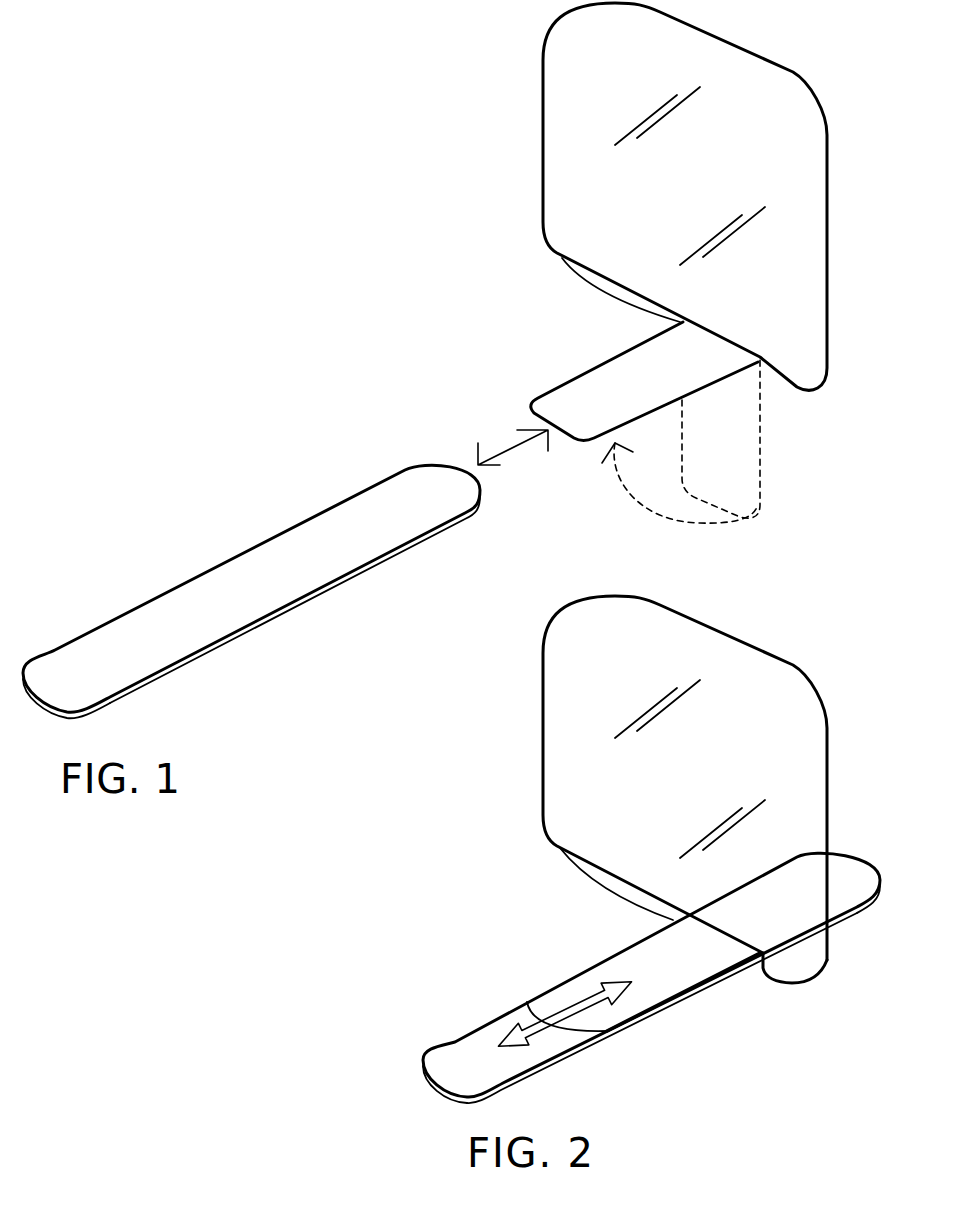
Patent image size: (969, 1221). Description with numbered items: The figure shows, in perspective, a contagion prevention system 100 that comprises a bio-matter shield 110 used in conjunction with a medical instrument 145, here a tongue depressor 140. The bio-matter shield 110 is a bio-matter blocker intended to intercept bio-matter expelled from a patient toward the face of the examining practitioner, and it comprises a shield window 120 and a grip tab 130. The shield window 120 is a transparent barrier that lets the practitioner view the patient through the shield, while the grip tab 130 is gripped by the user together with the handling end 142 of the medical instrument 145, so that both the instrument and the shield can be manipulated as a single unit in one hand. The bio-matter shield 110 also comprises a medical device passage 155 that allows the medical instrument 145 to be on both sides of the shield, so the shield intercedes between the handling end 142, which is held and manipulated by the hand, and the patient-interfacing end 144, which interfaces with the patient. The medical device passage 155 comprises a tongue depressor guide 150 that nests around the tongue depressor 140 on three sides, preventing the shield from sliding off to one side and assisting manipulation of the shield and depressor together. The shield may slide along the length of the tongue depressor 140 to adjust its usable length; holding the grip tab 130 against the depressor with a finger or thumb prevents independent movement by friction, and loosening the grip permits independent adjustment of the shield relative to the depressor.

In FIG. 1, the contagion prevention system 100 is at (508, 49).
In FIG. 2, the contagion prevention system 100 is at (784, 630).
In FIG. 1, the bio-matter shield 110 is at (502, 95).
In FIG. 2, the bio-matter shield 110 is at (512, 753).
In FIG. 1, the shield window 120 is at (570, 169).
In FIG. 2, the shield window 120 is at (560, 798).
In FIG. 1, the grip tab 130 is at (600, 357).
In FIG. 2, the grip tab 130 is at (617, 957).
In FIG. 1, the tongue depressor 140 is at (293, 526).
In FIG. 2, the tongue depressor 140 is at (470, 1032).
In FIG. 2, the handling end 142 is at (580, 1076).
In FIG. 2, the patient-interfacing end 144 is at (866, 936).
In FIG. 1, the medical instrument 145 is at (145, 568).
In FIG. 2, the tongue depressor guide 150 is at (747, 996).
In FIG. 1, the medical device passage 155 is at (740, 392).
In FIG. 2, the medical device passage 155 is at (630, 918).